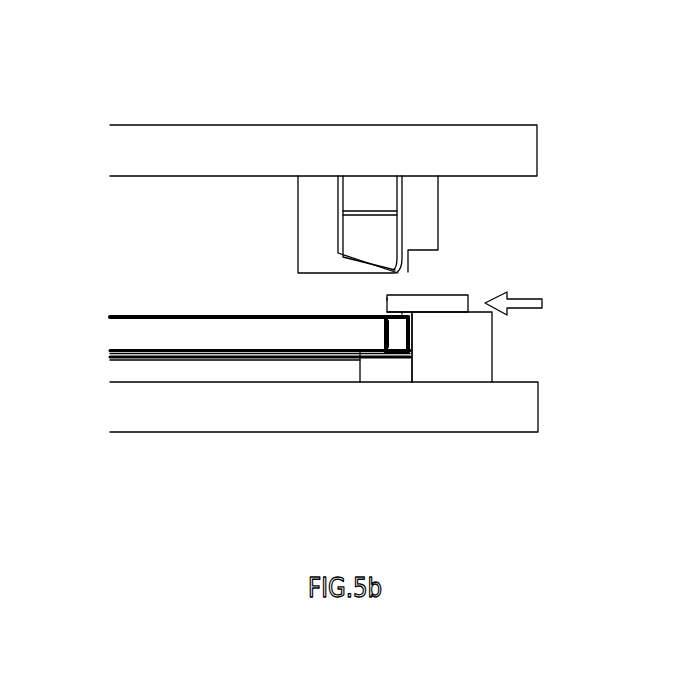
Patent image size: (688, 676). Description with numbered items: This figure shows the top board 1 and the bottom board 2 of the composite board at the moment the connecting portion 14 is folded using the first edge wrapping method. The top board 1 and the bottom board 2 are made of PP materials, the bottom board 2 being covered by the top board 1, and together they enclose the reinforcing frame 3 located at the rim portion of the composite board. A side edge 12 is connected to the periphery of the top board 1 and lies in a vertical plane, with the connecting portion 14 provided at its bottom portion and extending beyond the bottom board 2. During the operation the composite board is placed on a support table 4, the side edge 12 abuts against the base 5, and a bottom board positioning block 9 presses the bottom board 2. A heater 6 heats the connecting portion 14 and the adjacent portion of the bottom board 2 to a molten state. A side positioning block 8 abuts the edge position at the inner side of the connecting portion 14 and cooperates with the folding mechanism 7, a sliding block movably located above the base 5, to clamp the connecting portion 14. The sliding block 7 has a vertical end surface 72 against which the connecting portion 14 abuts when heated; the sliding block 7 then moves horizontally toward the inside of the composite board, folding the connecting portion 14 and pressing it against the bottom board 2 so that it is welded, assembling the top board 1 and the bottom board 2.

The top board 1 is at (110, 350).
The bottom board 2 is at (145, 316).
The reinforcing frame 3 is at (397, 338).
The support table 4 is at (183, 373).
The base 5 is at (480, 363).
The heater 6 is at (375, 242).
The folding mechanism 7 is at (455, 302).
The side positioning block 8 is at (427, 240).
The bottom board positioning block 9 is at (322, 235).
The side edge 12 is at (412, 330).
The connecting portion 14 is at (408, 315).
The vertical end surface 72 is at (387, 300).